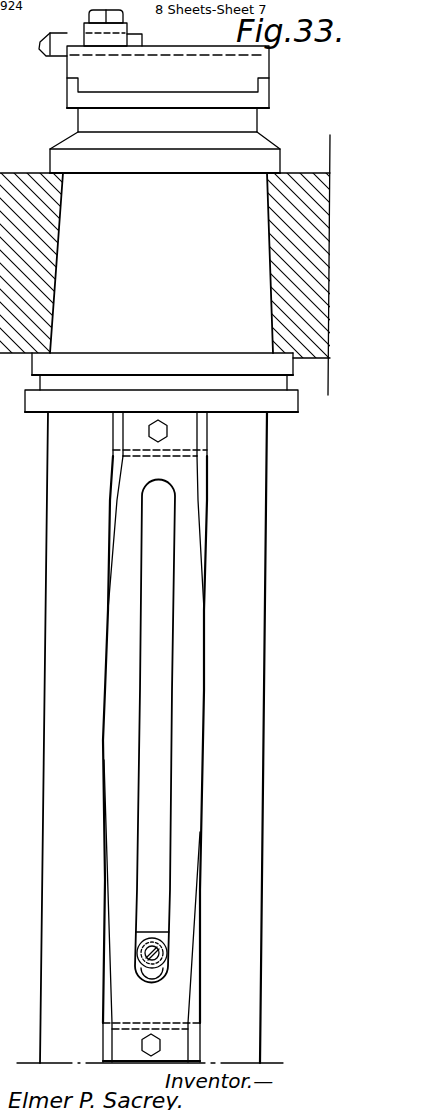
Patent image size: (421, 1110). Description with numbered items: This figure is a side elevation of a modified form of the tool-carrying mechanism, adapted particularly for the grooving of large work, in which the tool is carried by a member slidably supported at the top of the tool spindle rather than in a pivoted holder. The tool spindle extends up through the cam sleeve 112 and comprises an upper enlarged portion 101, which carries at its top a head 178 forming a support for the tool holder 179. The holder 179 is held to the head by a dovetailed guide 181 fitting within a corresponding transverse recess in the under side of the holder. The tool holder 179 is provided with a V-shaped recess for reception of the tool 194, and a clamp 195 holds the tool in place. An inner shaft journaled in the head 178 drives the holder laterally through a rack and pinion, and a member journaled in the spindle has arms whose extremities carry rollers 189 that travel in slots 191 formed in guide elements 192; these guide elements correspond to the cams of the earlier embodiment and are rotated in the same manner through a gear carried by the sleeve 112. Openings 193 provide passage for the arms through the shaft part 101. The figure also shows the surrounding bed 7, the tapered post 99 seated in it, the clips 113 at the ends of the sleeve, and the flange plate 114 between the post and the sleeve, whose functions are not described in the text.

The bed 7 is at (299, 177).
The tapered post 99 is at (161, 263).
The upper enlarged portion 101 is at (95, 118).
The cam sleeve 112 is at (247, 612).
The clips 113 is at (113, 456).
The flange plate 114 is at (283, 402).
The head 178 is at (152, 104).
The tool holder 179 is at (176, 67).
The dovetailed guide 181 is at (72, 84).
The roller 189 is at (150, 934).
The slot 191 is at (174, 668).
The guide element 192 is at (193, 728).
The opening 193 is at (158, 937).
The tool 194 is at (42, 57).
The clamp 195 is at (128, 25).